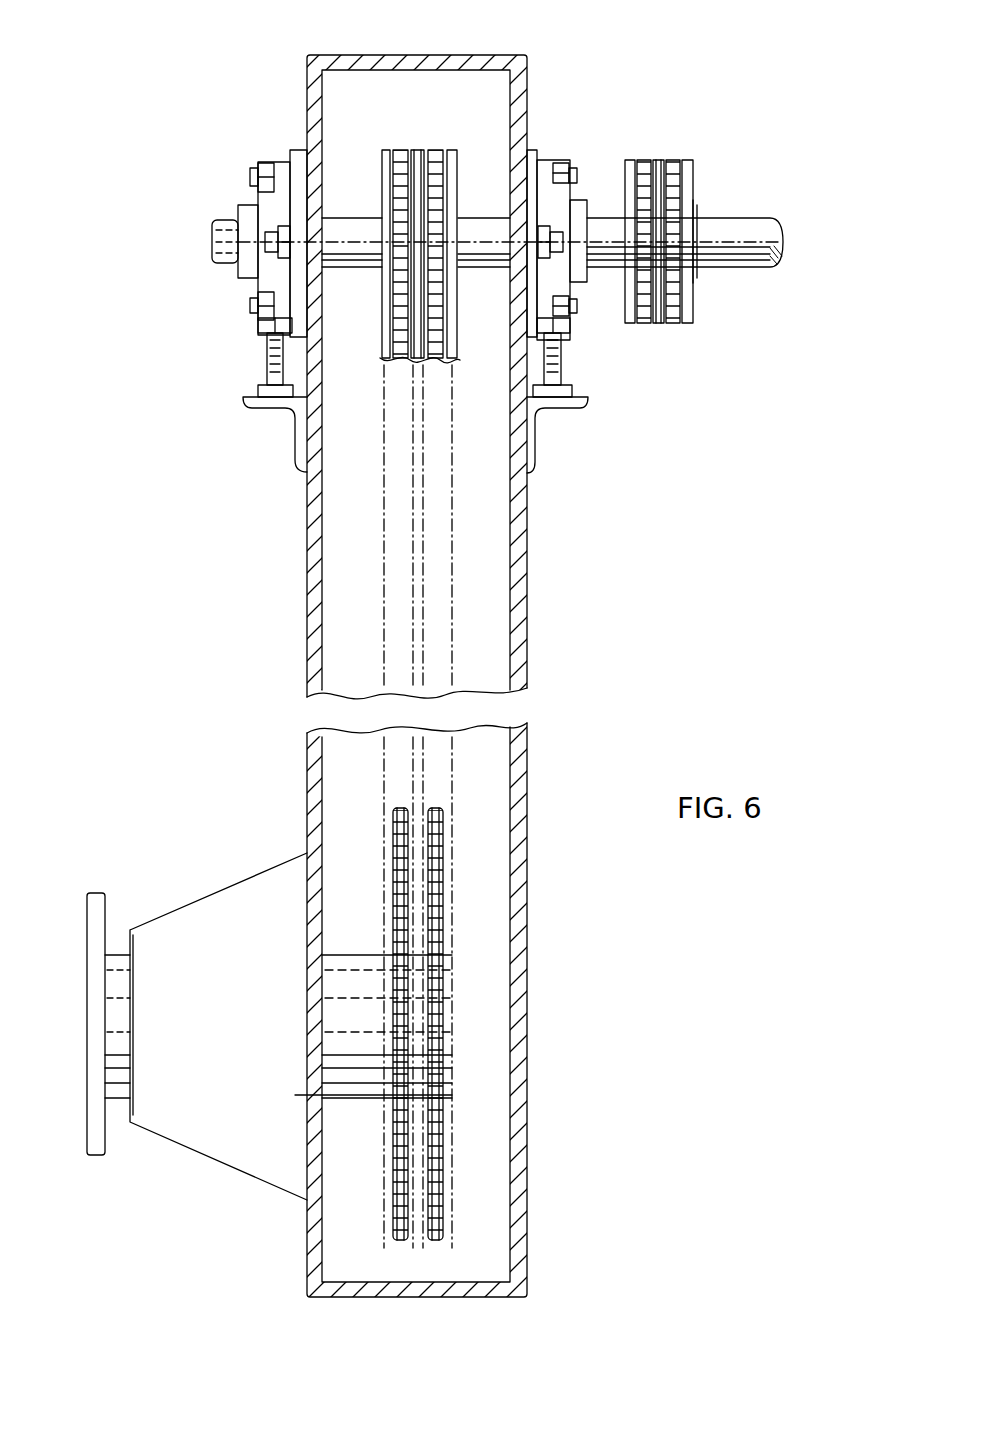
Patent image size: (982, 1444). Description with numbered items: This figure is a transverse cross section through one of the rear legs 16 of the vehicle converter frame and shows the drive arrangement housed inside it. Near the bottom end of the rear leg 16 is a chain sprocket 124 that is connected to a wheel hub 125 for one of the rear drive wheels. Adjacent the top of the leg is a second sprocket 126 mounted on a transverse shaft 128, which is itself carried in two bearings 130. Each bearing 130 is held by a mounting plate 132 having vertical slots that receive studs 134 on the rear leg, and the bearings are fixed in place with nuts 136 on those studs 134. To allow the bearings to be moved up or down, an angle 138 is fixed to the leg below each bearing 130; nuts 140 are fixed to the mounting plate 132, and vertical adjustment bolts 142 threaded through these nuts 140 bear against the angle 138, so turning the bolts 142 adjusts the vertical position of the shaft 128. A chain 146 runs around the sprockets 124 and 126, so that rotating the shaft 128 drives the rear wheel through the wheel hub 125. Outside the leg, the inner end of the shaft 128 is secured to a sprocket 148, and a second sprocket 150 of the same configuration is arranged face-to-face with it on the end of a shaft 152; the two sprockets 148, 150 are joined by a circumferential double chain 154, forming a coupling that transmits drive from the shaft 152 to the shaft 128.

The rear leg 16 is at (300, 593).
The chain sprocket 124 is at (462, 990).
The wheel hub 125 is at (157, 1175).
The second sprocket 126 is at (377, 133).
The transverse shaft 128 is at (484, 212).
The bearing 130 is at (248, 205).
The mounting plate 132 is at (292, 152).
The stud 134 is at (270, 243).
The nut 136 is at (275, 240).
The angle 138 is at (283, 408).
The nut 140 is at (258, 325).
The vertical adjustment bolt 142 is at (252, 362).
The chain 146 is at (458, 577).
The sprocket 148 is at (638, 165).
The second sprocket 150 is at (695, 298).
The shaft 152 is at (752, 210).
The circumferential double chain 154 is at (706, 182).